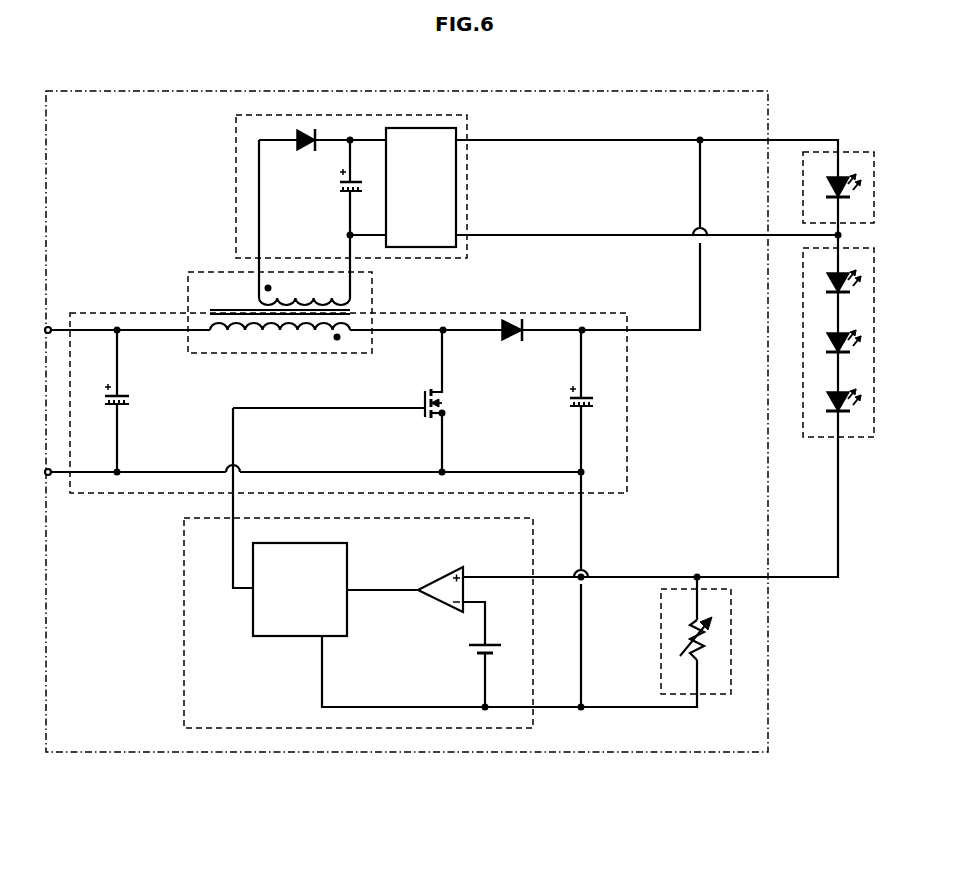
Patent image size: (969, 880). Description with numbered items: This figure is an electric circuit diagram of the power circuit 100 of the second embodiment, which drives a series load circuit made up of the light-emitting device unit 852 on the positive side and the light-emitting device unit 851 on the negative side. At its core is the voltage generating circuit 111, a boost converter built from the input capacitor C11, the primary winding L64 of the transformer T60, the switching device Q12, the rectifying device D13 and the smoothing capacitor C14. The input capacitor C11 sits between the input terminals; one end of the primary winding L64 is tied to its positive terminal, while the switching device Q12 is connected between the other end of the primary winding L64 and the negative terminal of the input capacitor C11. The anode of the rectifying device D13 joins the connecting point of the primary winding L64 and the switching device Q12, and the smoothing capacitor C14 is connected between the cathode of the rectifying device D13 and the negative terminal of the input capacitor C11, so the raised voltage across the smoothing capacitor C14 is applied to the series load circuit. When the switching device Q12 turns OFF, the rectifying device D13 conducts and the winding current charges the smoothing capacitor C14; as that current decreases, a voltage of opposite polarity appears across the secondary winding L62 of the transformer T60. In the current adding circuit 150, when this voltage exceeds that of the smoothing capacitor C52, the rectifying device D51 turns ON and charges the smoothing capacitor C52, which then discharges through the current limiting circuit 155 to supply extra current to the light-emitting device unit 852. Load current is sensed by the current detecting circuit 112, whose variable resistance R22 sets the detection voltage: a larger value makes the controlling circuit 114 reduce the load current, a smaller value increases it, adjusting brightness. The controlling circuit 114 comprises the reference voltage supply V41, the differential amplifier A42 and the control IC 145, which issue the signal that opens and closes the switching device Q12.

The power circuit 100 is at (777, 86).
The current adding circuit 150 is at (466, 126).
The current limiting circuit 155 is at (456, 190).
The voltage generating circuit 111 is at (636, 311).
The current detecting circuit 112 is at (734, 696).
The controlling circuit 114 is at (172, 533).
The control IC 145 is at (350, 555).
The light-emitting device unit 852 is at (876, 164).
The light-emitting device unit 851 is at (874, 437).
The rectifying device D51 is at (302, 153).
The smoothing capacitor C52 is at (342, 198).
The secondary winding L62 is at (316, 282).
The transformer T60 is at (184, 285).
The primary winding L64 is at (278, 338).
The input capacitor C11 is at (122, 394).
The rectifying device D13 is at (510, 342).
The switching device Q12 is at (428, 420).
The smoothing capacitor C14 is at (571, 411).
The differential amplifier A42 is at (438, 582).
The reference voltage supply V41 is at (475, 665).
The variable resistance R22 is at (671, 635).